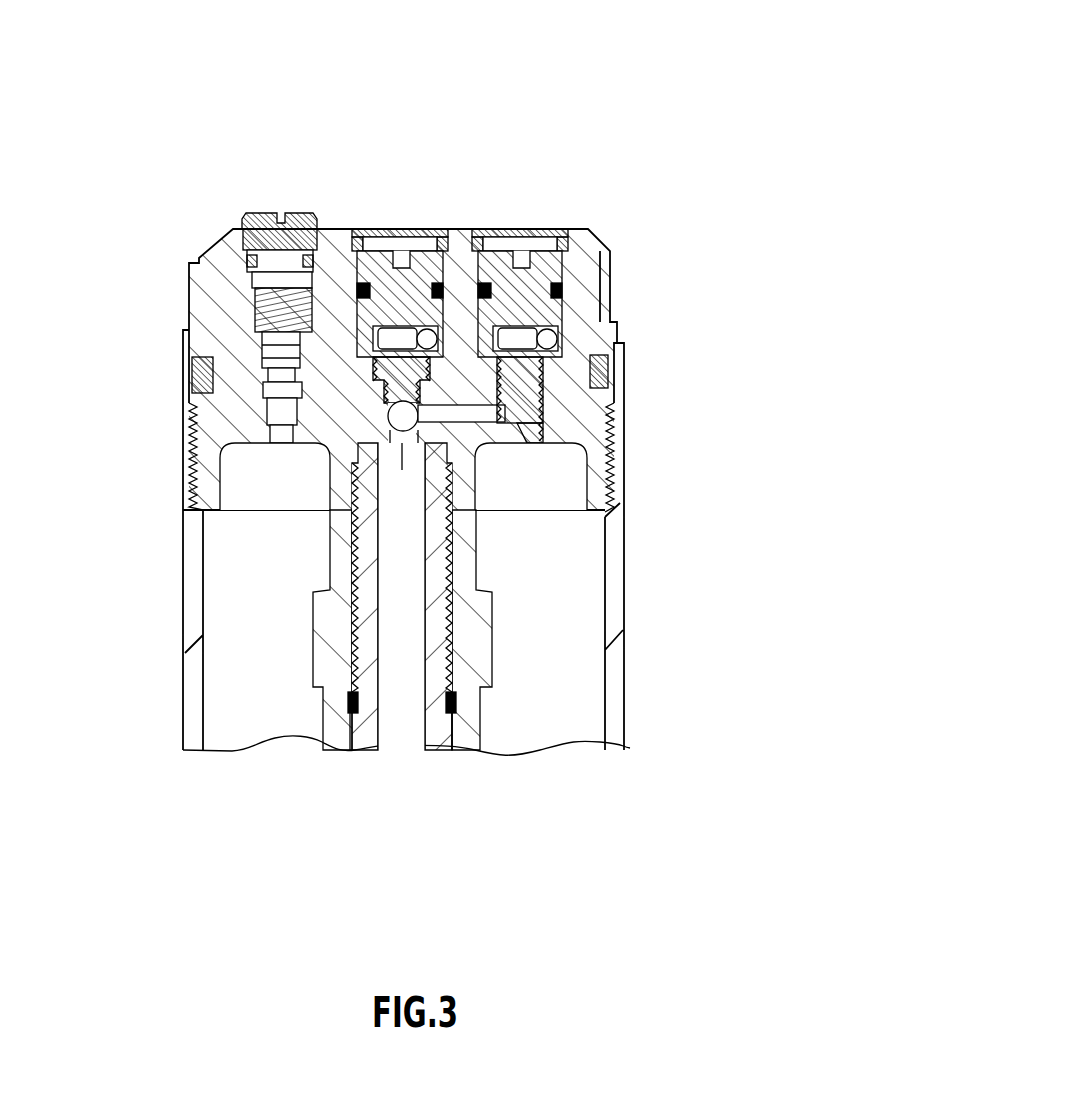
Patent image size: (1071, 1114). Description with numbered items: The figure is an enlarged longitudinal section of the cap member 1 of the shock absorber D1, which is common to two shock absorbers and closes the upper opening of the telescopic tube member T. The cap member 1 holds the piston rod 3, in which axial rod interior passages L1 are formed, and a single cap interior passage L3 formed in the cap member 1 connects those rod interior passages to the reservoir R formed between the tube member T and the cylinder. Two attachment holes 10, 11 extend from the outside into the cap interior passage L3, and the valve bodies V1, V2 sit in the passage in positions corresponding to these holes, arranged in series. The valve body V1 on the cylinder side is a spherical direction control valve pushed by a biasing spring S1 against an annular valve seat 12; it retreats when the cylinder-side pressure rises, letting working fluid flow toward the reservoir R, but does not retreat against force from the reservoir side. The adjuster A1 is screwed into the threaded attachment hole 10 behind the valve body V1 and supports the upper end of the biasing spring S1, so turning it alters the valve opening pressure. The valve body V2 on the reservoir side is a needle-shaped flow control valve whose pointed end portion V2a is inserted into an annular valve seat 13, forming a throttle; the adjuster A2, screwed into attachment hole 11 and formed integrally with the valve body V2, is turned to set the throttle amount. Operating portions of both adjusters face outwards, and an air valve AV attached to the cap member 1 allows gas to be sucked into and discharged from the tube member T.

The cap member 1 is at (177, 276).
The tube member T is at (171, 702).
The reservoir R is at (565, 690).
The air valve AV is at (260, 216).
The shock absorber D1 is at (683, 168).
The attachment hole 10 is at (378, 235).
The adjuster A1 is at (420, 229).
The biasing spring S1 is at (360, 378).
The valve seat 12 is at (386, 414).
The cap interior passage L3 is at (470, 402).
The attachment hole 11 is at (500, 229).
The adjuster A2 is at (550, 229).
The valve seat 13 is at (545, 425).
The pointed end portion V2a is at (545, 437).
The valve body V1 is at (350, 527).
The valve body V2 is at (517, 469).
The piston rod 3 is at (457, 712).
The rod interior passage L1 is at (403, 720).